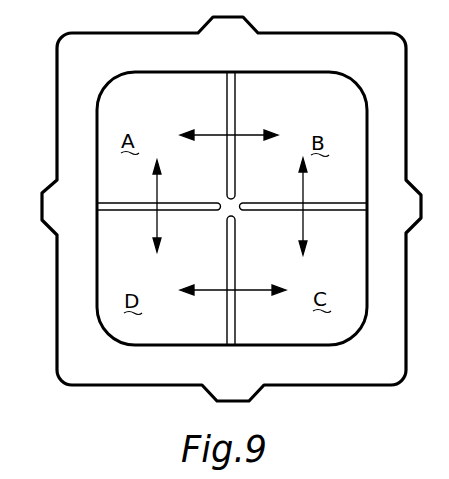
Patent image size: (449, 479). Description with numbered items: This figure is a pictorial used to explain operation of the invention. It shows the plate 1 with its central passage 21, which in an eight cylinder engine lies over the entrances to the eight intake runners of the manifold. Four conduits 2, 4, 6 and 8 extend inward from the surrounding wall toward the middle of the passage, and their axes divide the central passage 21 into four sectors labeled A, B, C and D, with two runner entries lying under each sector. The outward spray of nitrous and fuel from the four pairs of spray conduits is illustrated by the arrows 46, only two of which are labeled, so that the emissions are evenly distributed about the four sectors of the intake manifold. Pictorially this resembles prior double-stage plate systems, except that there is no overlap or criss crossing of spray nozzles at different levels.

The panel body 1 is at (53, 88).
The conduit 2 is at (202, 202).
The conduit 4 is at (237, 176).
The conduit 6 is at (282, 211).
The conduit 8 is at (227, 251).
The central passage 21 is at (158, 109).
The arrows 46 is at (213, 131).